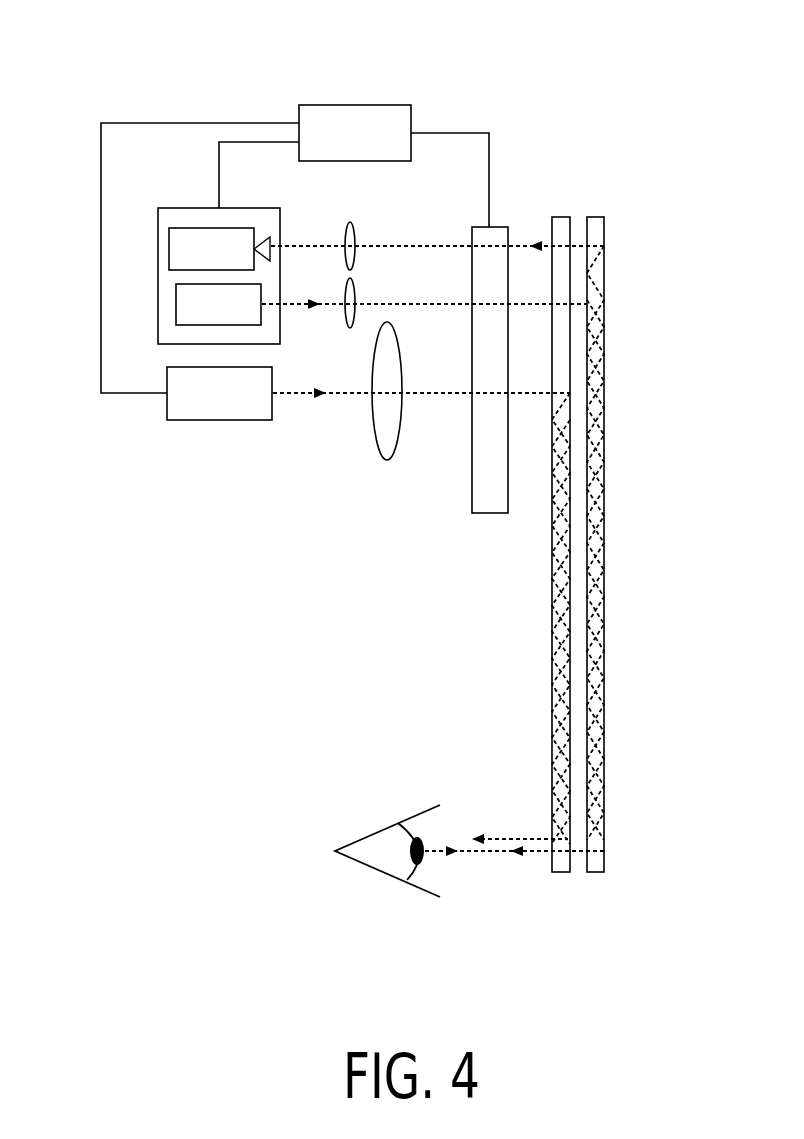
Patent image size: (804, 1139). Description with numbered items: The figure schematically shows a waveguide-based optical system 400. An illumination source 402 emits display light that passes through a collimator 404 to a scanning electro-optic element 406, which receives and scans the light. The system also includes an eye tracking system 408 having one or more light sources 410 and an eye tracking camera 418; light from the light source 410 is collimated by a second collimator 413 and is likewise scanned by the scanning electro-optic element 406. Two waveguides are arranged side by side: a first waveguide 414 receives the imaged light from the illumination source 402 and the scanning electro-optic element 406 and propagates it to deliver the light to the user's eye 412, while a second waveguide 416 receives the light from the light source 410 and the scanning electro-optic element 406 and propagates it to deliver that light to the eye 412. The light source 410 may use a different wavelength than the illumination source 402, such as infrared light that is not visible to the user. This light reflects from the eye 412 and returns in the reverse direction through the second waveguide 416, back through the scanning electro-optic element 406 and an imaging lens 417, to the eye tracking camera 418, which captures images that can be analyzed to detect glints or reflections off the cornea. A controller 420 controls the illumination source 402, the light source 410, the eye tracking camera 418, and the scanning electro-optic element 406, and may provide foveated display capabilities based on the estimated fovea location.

The optical system 400 is at (127, 40).
The illumination source 402 is at (202, 405).
The collimator 404 is at (387, 460).
The scanning electro-optic element 406 is at (487, 513).
The eye tracking system 408 is at (262, 208).
The light source 410 is at (201, 316).
The eye 412 is at (397, 823).
The collimator 413 is at (352, 281).
The first waveguide 414 is at (571, 545).
The second waveguide 416 is at (604, 495).
The imaging lens 417 is at (352, 225).
The eye tracking camera 418 is at (194, 261).
The controller 420 is at (355, 105).